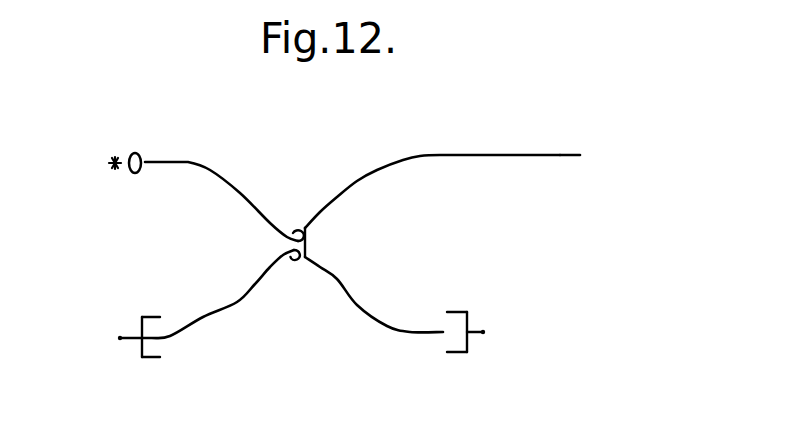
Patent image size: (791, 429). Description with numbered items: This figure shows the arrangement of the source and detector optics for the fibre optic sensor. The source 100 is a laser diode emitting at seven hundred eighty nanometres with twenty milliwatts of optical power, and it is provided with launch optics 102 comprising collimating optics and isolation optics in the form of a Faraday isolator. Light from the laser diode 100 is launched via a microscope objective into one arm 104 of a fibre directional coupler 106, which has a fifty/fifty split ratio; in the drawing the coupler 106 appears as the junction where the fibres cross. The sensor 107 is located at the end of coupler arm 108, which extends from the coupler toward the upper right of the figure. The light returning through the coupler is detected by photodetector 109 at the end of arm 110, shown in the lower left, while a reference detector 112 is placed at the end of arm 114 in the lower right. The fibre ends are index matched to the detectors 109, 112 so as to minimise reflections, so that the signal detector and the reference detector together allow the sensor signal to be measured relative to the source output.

The source 100 is at (111, 157).
The launch optics 102 is at (143, 155).
The arm 104 is at (242, 195).
The fibre directional coupler 106 is at (306, 243).
The sensor 107 is at (570, 155).
The coupler arm 108 is at (443, 155).
The photodetector 109 is at (150, 357).
The arm 110 is at (237, 302).
The reference detector 112 is at (462, 352).
The arm 114 is at (355, 306).